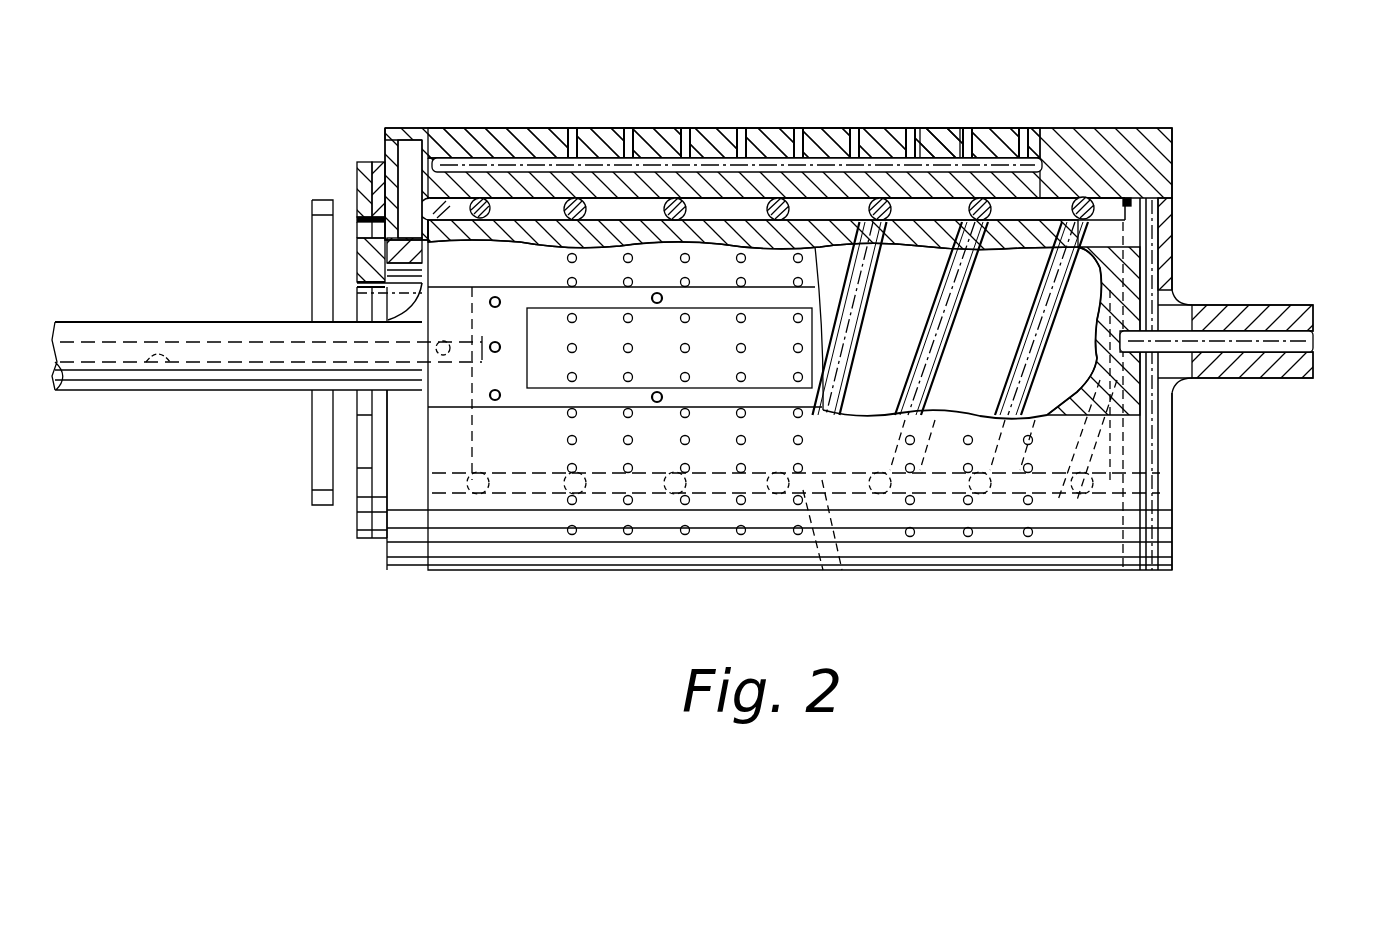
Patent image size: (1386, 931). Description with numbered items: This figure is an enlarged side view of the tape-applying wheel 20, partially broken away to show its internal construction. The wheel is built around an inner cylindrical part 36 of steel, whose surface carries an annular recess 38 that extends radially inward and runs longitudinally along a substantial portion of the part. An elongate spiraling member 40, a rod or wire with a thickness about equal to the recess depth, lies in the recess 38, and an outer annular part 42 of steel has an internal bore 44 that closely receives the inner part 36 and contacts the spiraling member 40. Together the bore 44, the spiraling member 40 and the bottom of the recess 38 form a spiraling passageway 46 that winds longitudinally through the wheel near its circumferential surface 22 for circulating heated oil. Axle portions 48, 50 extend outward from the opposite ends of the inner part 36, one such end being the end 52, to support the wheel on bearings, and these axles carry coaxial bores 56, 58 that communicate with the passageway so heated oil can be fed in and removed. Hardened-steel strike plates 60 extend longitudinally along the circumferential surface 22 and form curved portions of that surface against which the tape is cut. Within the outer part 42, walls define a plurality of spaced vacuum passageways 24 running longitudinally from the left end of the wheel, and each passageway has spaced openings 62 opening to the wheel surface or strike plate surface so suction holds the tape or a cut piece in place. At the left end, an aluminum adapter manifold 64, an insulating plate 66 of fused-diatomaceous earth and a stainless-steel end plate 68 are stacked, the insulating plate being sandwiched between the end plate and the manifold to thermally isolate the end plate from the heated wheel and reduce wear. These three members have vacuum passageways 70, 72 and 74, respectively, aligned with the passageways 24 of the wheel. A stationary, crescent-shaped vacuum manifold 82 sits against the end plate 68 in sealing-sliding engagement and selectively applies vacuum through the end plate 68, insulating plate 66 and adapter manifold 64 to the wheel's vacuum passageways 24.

The tape-applying wheel 20 is at (1178, 141).
The circumferential surface 22 is at (1060, 128).
The vacuum passageways 24 is at (470, 132).
The inner cylindrical part 36 is at (1036, 210).
The annular recess 38 is at (512, 218).
The elongate spiraling member 40 is at (675, 203).
The outer annular part 42 is at (942, 128).
The internal bore 44 is at (438, 135).
The spiraling passageway 46 is at (872, 570).
The axle portion 48 is at (1285, 308).
The axle portion 50 is at (102, 320).
The end of the inner part 52 is at (1178, 270).
The coaxial bore 56 is at (1275, 348).
The coaxial bore 58 is at (146, 365).
The strike plate 60 is at (602, 356).
The openings 62 is at (910, 128).
The adapter manifold 64 is at (405, 572).
The insulating plate 66 is at (379, 540).
The end plate 68 is at (360, 540).
The vacuum passageways of the adapter manifold 70 is at (384, 138).
The vacuum passageways of the insulating plate 72 is at (358, 168).
The vacuum passageways of the end plate 74 is at (358, 212).
The stationary vacuum manifold 82 is at (310, 488).